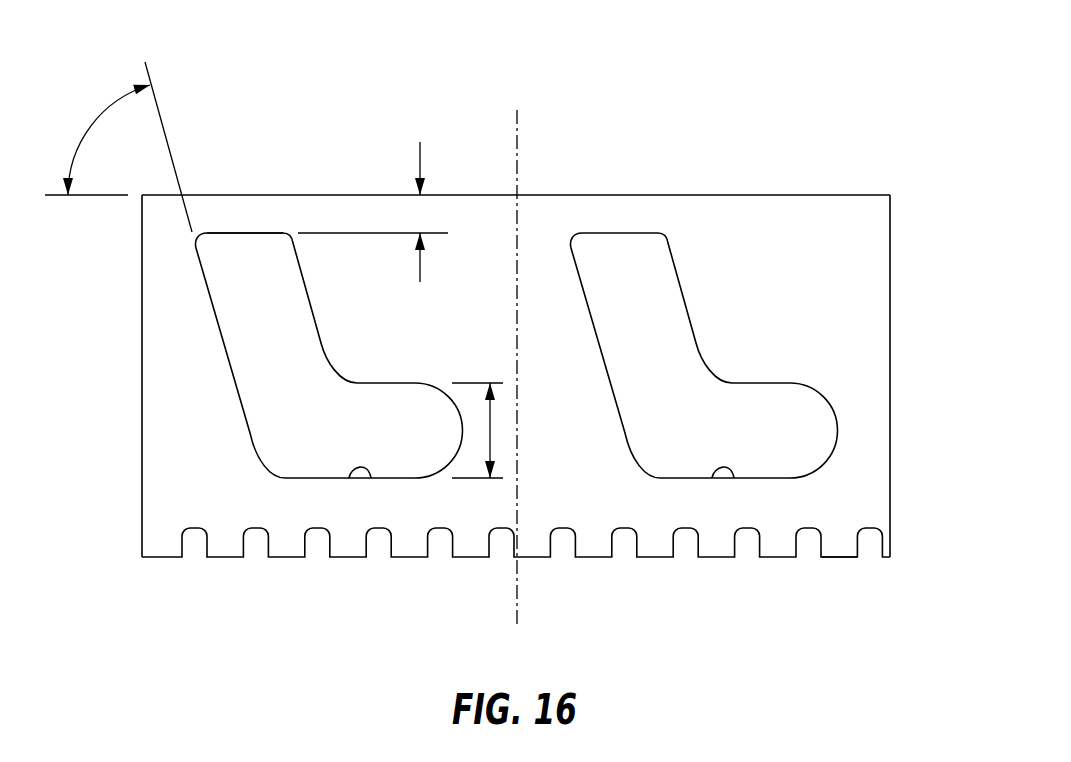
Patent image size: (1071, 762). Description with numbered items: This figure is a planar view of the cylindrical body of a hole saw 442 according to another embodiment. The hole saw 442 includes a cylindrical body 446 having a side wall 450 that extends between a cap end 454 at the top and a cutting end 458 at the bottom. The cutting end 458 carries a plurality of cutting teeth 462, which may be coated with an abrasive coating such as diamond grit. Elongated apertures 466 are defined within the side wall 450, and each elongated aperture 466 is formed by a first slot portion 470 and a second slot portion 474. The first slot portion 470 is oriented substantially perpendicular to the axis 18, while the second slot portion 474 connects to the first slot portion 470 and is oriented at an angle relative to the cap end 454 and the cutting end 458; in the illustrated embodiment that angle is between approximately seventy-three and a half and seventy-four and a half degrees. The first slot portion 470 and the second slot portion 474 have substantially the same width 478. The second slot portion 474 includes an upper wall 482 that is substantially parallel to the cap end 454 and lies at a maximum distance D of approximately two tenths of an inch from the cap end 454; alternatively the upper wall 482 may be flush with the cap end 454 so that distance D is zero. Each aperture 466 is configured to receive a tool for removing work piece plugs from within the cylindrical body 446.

The hole saw 442 is at (550, 336).
The cap end 454 is at (722, 195).
The cylindrical body 446 is at (893, 249).
The side wall 450 is at (857, 306).
The cutting end 458 is at (842, 560).
The cutting teeth 462 is at (778, 548).
The elongated aperture 466 is at (247, 437).
The first slot portion 470 is at (349, 478).
The second slot portion 474 is at (225, 352).
The width 478 is at (490, 430).
The upper wall 482 is at (242, 232).
The axis 18 is at (519, 152).
The distance D is at (373, 196).